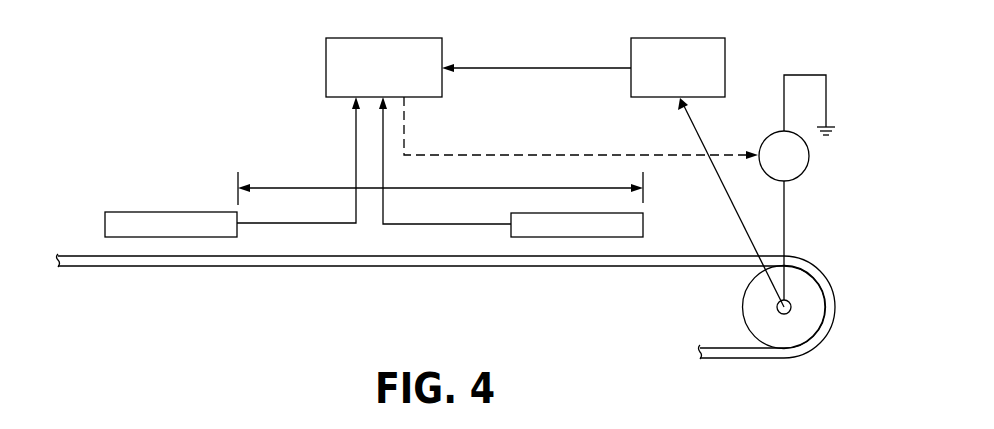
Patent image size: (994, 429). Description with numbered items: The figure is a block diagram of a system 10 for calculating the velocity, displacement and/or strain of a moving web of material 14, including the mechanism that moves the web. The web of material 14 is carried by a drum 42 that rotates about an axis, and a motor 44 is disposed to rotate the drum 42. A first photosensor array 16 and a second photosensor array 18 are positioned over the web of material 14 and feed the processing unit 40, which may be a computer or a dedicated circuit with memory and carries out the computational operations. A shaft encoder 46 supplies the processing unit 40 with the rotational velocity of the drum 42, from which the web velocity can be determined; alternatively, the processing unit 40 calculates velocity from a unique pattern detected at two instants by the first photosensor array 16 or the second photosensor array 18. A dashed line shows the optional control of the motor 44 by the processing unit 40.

The system 10 is at (223, 78).
The web of material 14 is at (318, 266).
The first photosensor array 16 is at (115, 212).
The second photosensor array 18 is at (645, 223).
The processing unit 40 is at (390, 38).
The drum 42 is at (755, 310).
The motor 44 is at (808, 167).
The shaft encoder 46 is at (658, 38).